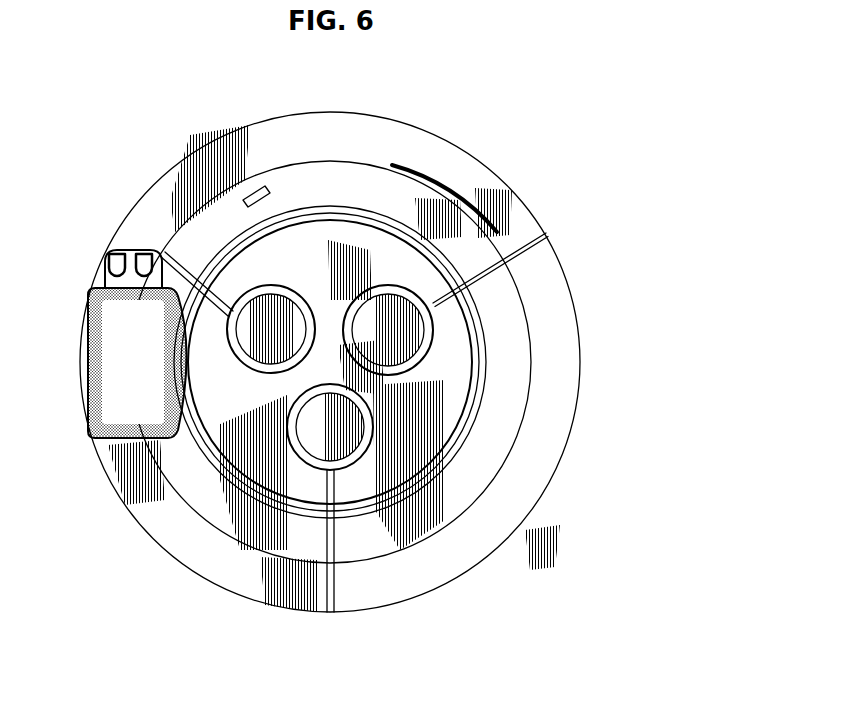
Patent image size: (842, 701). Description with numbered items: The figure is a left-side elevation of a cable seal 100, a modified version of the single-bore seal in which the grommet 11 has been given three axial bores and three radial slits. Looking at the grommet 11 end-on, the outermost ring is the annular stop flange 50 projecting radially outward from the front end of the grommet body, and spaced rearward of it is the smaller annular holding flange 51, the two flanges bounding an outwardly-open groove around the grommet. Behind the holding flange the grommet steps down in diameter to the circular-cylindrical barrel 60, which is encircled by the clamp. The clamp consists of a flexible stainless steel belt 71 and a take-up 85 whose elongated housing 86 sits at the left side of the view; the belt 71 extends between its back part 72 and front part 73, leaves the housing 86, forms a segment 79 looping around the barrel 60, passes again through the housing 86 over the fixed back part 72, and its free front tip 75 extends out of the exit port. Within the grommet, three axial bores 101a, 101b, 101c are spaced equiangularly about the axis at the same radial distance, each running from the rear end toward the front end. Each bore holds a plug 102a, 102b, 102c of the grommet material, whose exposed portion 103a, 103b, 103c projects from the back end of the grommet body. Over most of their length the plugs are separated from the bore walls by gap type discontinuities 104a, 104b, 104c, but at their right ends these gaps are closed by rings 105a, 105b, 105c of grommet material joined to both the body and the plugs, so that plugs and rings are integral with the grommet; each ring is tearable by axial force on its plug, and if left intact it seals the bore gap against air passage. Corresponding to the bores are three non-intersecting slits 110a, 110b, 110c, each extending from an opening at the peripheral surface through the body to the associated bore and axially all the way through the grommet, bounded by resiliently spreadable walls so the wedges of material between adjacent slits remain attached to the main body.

The grommet 11 is at (495, 188).
The stop flange 50 is at (437, 135).
The holding flange 51 is at (425, 188).
The barrel 60 is at (427, 380).
The belt 71 is at (380, 217).
The back part of belt 72 is at (183, 440).
The front part of belt 73 is at (228, 302).
The front tip (tongue) 75 is at (283, 287).
The belt segment 79 is at (477, 339).
The take-up 85 is at (88, 347).
The housing 86 is at (120, 387).
The cable seal 100 is at (631, 437).
The axial bore 101a is at (310, 473).
The axial bore 101b is at (440, 408).
The axial bore 101c is at (262, 287).
The plug 102a is at (353, 465).
The plug 102b is at (433, 318).
The plug 102c is at (258, 375).
The exposed portion of plug 103a is at (353, 443).
The exposed portion of plug 103b is at (428, 349).
The exposed portion of plug 103c is at (305, 315).
The gap type discontinuity 104a is at (437, 437).
The gap type discontinuity 104b is at (395, 285).
The gap type discontinuity 104c is at (240, 296).
The ring 105a is at (270, 460).
The ring 105b is at (540, 432).
The ring 105c is at (290, 212).
The slit 110a is at (333, 590).
The slit 110b is at (530, 255).
The slit 110c is at (172, 255).